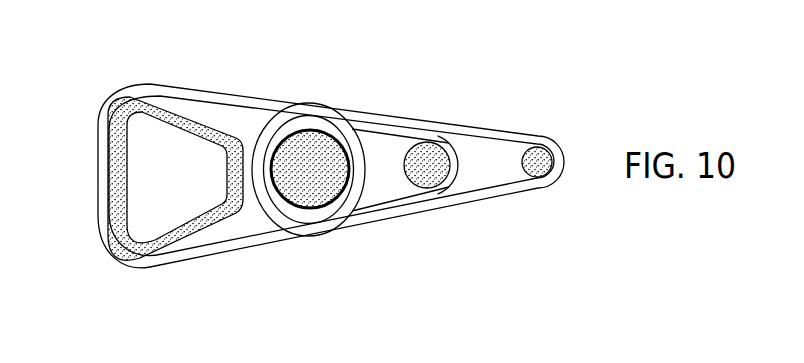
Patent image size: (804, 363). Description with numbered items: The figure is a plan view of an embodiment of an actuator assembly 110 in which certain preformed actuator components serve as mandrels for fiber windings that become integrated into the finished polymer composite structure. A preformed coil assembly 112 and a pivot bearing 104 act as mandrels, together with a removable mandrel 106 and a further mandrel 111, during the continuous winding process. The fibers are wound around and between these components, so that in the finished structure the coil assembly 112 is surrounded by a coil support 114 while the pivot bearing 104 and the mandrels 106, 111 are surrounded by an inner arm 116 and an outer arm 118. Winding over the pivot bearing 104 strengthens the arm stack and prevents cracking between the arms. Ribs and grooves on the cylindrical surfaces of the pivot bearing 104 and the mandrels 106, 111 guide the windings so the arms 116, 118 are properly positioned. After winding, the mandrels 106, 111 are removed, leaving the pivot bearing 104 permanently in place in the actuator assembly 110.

The actuator assembly 110 is at (545, 93).
The coil assembly 112 is at (158, 96).
The coil support 114 is at (107, 252).
The inner arm 116 is at (364, 118).
The outer arm 118 is at (470, 123).
The pivot bearing 104 is at (283, 200).
The removable mandrel 106 is at (411, 190).
The mandrel 111 is at (533, 180).